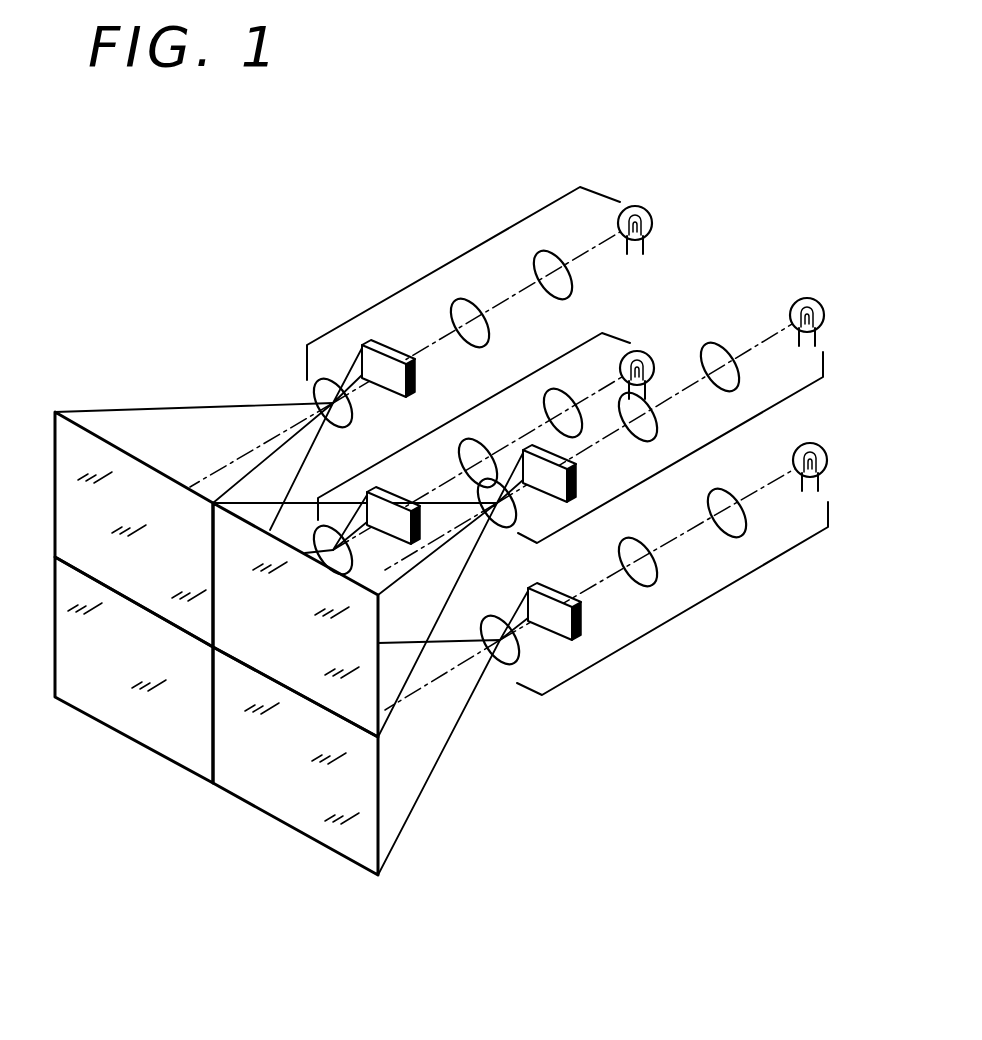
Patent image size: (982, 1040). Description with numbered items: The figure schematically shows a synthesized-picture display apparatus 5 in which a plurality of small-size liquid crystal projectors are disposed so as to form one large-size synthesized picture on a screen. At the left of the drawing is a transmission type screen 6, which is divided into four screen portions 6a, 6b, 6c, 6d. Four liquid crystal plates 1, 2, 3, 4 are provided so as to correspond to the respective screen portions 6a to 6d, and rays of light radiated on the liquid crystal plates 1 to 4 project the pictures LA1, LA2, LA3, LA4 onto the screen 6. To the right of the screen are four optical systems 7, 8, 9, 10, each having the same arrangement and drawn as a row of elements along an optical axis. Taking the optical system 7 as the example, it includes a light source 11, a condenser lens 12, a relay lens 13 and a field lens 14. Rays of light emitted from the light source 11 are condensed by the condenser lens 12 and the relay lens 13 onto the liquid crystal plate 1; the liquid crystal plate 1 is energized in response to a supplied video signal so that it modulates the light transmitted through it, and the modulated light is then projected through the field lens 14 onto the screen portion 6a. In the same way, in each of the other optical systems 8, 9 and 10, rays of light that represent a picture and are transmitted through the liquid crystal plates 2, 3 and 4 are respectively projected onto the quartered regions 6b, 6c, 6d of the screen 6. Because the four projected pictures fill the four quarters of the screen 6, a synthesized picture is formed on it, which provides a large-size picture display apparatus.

The liquid crystal plate 1 is at (582, 628).
The liquid crystal plate 2 is at (570, 482).
The liquid crystal plate 3 is at (380, 350).
The liquid crystal plate 4 is at (388, 490).
The synthesized-picture display apparatus 5 is at (684, 818).
The transmission type screen 6 is at (216, 610).
The screen portion 6a is at (270, 795).
The screen portion 6b is at (242, 560).
The screen portion 6c is at (85, 450).
The screen portion 6d is at (90, 698).
The optical system 7 is at (680, 546).
The optical system 8 is at (742, 424).
The optical system 9 is at (448, 263).
The optical system 10 is at (458, 416).
The light source 11 is at (812, 440).
The condenser lens 12 is at (737, 538).
The relay lens 13 is at (642, 588).
The field lens 14 is at (500, 668).
The picture LA1 is at (443, 766).
The picture LA2 is at (450, 598).
The picture LA3 is at (178, 405).
The picture LA4 is at (320, 553).